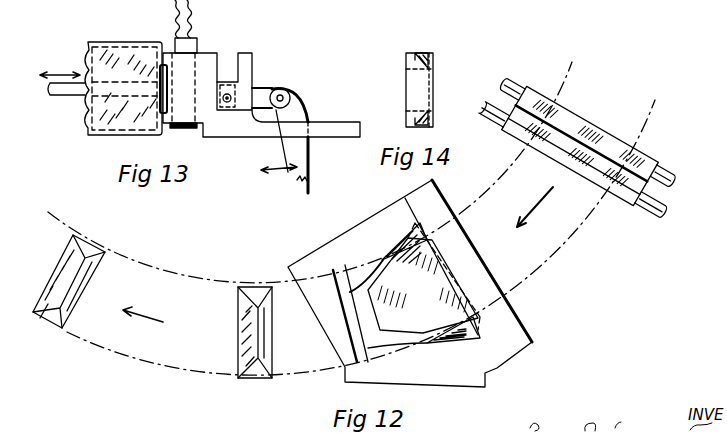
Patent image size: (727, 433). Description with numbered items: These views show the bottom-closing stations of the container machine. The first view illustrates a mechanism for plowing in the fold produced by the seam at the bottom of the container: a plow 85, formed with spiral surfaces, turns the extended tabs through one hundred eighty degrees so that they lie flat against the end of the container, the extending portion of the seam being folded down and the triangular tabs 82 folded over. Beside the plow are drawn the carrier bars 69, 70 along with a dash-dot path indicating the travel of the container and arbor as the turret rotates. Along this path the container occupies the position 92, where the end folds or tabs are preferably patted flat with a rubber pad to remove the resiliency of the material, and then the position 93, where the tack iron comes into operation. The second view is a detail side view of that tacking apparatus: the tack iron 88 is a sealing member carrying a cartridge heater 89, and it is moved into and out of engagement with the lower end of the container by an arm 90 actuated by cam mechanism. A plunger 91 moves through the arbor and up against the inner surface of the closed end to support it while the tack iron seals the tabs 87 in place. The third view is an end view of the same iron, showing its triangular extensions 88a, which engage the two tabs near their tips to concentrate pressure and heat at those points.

In FIG. 12, the upper bar of transfer carrier 69 is at (570, 128).
In FIG. 12, the lower bar of transfer carrier 70 is at (558, 140).
In FIG. 12, the triangular tabs 82 is at (640, 157).
In FIG. 12, the plow 85 is at (377, 222).
In FIG. 13, the tabs 87 is at (160, 118).
In FIG. 12, the tabs 87 is at (480, 330).
In FIG. 13, the tack iron 88 is at (203, 63).
In FIG. 14, the tack iron 88 is at (435, 82).
In FIG. 13, the extensions 88a is at (167, 128).
In FIG. 14, the extensions 88a is at (422, 55).
In FIG. 13, the cartridge heater 89 is at (192, 43).
In FIG. 13, the arm 90 is at (310, 160).
In FIG. 13, the plunger 91 is at (157, 55).
In FIG. 12, the position 92 is at (265, 405).
In FIG. 12, the position 93 is at (63, 351).